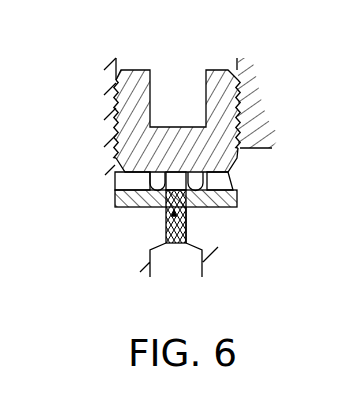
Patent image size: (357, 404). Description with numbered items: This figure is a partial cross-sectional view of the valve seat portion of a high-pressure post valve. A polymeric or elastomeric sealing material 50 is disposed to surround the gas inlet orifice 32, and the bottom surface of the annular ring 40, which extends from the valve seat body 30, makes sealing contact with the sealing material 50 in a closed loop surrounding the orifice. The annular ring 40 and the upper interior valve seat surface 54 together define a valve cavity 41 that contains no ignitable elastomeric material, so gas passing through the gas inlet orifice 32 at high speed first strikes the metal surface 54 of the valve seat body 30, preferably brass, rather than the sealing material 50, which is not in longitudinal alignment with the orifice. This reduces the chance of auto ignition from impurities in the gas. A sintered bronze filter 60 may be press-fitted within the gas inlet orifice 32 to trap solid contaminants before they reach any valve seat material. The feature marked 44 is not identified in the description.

The valve seat body 30 is at (132, 70).
The gas inlet orifice 32 is at (167, 222).
The annular ring 40 is at (152, 182).
The valve cavity 41 is at (218, 182).
The central boss 44 is at (168, 178).
The sealing material 50 is at (188, 214).
The interior valve seat surface 54 is at (190, 206).
The sintered bronze filter 60 is at (190, 232).